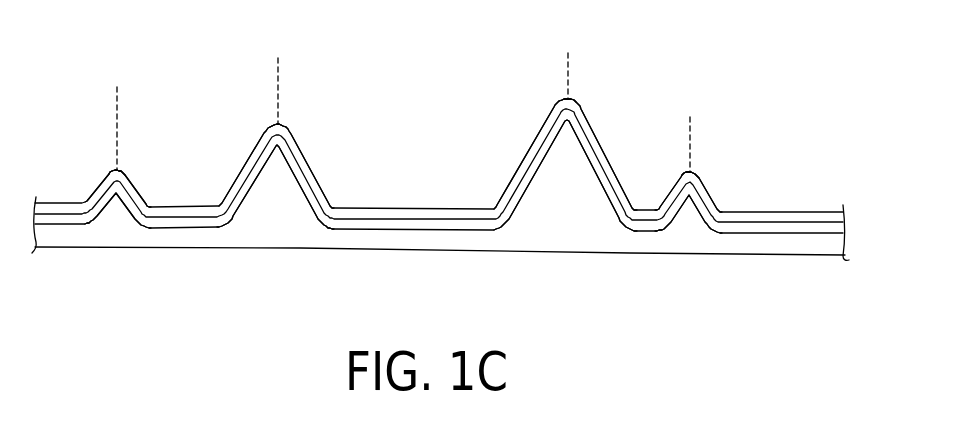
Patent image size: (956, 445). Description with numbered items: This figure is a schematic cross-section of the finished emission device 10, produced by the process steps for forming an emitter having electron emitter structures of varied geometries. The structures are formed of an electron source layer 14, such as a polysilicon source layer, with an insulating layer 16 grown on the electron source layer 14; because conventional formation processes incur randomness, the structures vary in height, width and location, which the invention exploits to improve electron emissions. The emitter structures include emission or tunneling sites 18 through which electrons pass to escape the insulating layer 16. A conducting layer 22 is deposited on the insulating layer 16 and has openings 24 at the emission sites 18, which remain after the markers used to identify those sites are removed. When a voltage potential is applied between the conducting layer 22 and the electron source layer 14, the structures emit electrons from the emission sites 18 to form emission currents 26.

The emission device 10 is at (442, 148).
The electron source layer 14 is at (808, 247).
The insulating layer 16 is at (818, 228).
The emission sites 18 is at (118, 194).
The conducting layer 22 is at (90, 195).
The openings 24 is at (119, 168).
The emission currents 26 is at (117, 114).